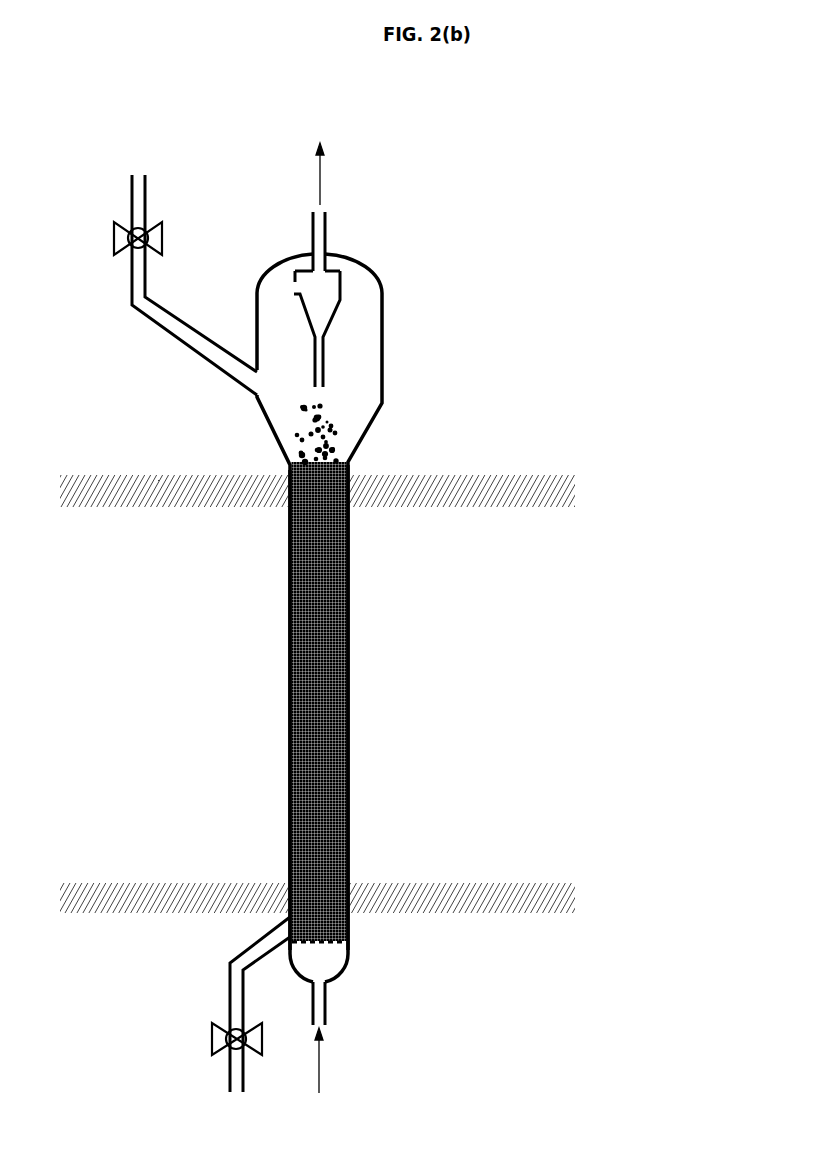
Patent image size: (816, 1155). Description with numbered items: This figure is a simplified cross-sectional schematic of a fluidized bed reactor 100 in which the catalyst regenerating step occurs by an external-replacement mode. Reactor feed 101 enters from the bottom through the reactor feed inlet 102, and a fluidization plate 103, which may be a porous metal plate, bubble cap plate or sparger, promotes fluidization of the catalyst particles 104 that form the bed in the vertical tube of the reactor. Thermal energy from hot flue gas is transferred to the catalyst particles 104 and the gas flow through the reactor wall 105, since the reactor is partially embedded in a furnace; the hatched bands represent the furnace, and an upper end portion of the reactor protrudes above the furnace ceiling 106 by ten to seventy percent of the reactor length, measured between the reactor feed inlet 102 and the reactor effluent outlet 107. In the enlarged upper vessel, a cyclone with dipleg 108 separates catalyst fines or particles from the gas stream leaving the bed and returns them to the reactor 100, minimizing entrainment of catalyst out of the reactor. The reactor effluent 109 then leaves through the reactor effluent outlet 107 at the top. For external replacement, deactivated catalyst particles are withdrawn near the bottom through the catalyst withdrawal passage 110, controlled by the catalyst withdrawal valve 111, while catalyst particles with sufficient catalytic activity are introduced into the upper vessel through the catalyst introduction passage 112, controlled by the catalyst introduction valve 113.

The fluidized bed reactor 100 is at (302, 537).
The reactor feed 101 is at (325, 1055).
The reactor feed inlet 102 is at (328, 1000).
The fluidization plate 103 is at (325, 947).
The catalyst particles 104 is at (287, 540).
The reactor wall 105 is at (350, 707).
The furnace ceiling 106 is at (468, 478).
The reactor effluent outlet 107 is at (327, 232).
The cyclone with dipleg 108 is at (340, 292).
The reactor effluent 109 is at (325, 178).
The catalyst withdrawal passage 110 is at (226, 995).
The catalyst withdrawal valve 111 is at (210, 1038).
The catalyst introduction passage 112 is at (128, 195).
The catalyst introduction valve 113 is at (113, 240).